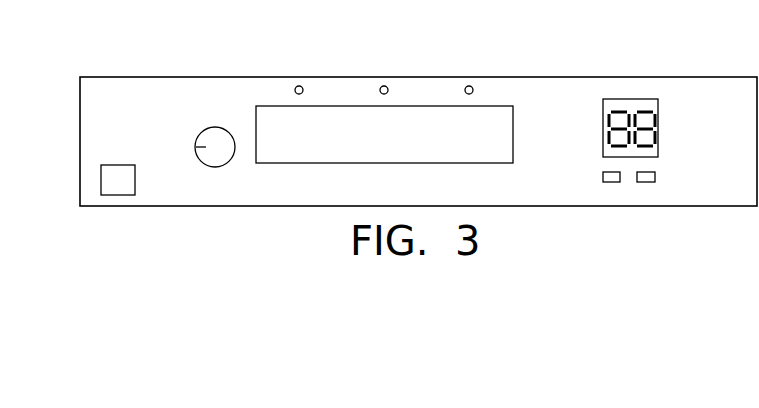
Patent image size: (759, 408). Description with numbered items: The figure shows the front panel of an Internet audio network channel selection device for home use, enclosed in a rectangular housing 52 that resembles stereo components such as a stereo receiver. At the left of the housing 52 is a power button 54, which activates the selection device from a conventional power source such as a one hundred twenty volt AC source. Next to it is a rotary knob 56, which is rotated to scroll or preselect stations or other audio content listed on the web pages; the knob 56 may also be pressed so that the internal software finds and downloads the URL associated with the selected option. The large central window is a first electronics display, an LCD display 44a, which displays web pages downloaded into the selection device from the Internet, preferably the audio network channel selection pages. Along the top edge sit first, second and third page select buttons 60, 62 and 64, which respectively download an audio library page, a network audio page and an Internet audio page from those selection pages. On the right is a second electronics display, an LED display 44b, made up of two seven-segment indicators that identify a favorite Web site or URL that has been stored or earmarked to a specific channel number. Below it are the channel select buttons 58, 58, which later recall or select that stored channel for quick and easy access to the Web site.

The rectangular housing 52 is at (173, 50).
The power button 54 is at (122, 180).
The rotary knob 56 is at (213, 157).
The LCD display 44a is at (310, 155).
The LED display 44b is at (620, 103).
The channel select buttons 58 is at (613, 177).
The first page select button 60 is at (296, 87).
The second page select button 62 is at (381, 87).
The third page select button 64 is at (466, 87).